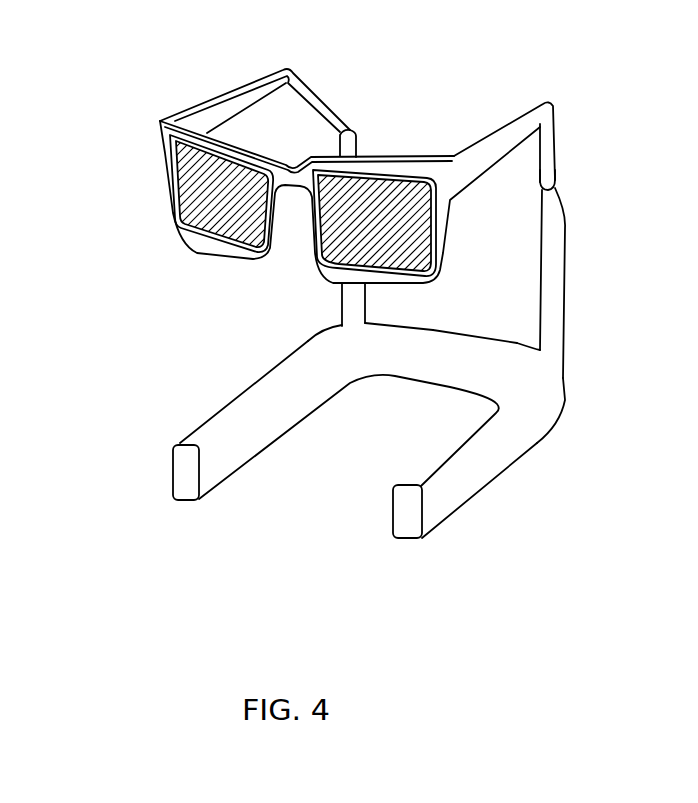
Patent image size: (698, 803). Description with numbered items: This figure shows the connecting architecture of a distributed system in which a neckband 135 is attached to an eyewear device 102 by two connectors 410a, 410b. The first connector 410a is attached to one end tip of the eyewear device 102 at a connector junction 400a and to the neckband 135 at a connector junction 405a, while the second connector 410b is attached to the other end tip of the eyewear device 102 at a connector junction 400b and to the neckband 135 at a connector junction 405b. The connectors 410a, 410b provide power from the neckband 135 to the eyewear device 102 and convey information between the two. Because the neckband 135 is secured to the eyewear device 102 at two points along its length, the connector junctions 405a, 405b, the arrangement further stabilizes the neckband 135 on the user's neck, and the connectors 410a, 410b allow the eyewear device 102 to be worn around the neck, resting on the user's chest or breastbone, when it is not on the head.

The eyewear device 102 is at (168, 258).
The neckband 135 is at (337, 632).
The connector junction 400a is at (352, 126).
The connector junction 400b is at (555, 178).
The connector junction 405a is at (342, 326).
The connector junction 405b is at (563, 380).
The connector 410a is at (366, 305).
The connector 410b is at (565, 282).